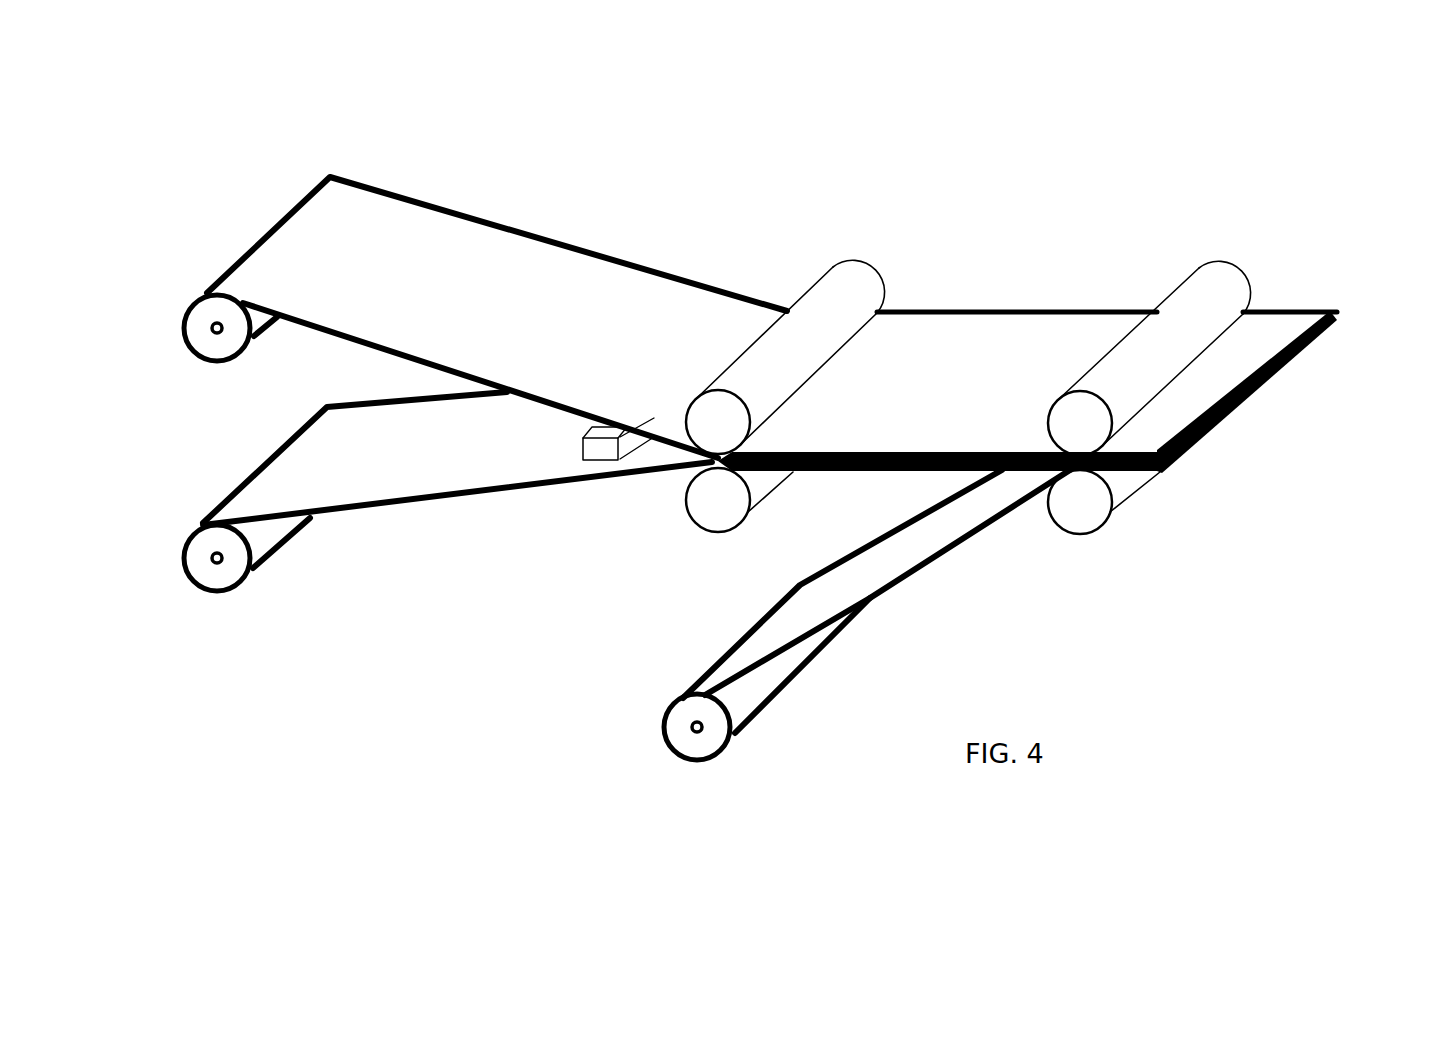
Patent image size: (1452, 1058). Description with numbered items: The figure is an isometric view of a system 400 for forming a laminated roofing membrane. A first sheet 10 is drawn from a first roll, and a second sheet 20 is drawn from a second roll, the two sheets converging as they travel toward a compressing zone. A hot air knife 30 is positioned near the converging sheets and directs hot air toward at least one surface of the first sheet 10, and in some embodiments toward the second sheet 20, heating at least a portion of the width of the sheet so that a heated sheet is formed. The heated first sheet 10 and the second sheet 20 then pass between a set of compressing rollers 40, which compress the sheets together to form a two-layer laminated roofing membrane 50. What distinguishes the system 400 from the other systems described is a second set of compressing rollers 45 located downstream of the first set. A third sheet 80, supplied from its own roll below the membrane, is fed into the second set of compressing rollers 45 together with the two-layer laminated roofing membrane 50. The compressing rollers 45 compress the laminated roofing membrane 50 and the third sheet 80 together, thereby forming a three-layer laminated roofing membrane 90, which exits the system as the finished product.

The system 400 is at (934, 224).
The first sheet 10 is at (227, 337).
The second sheet 20 is at (202, 565).
The hot air knife 30 is at (595, 467).
The compressing rollers 40 is at (714, 539).
The second set of compressing rollers 45 is at (1112, 527).
The laminated roofing membrane 50 is at (933, 362).
The third sheet 80 is at (681, 740).
The three-layer laminated roofing membrane 90 is at (1247, 339).